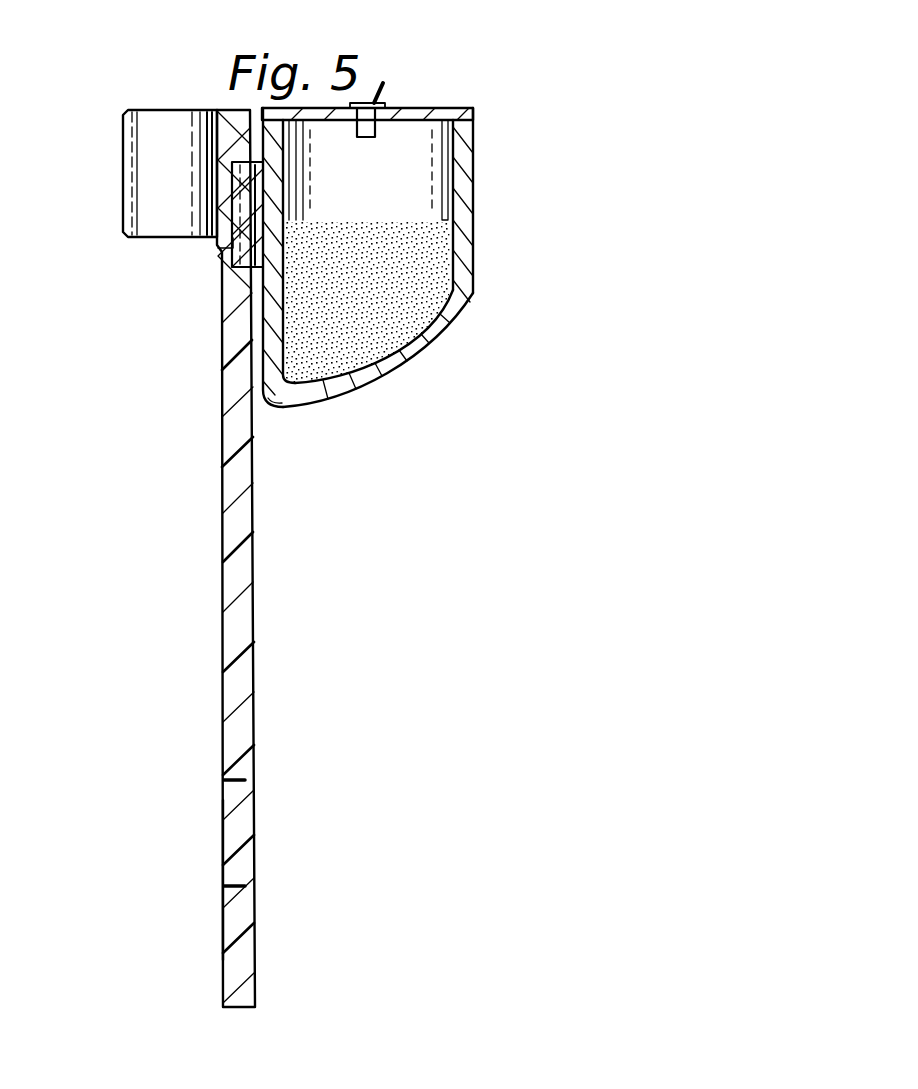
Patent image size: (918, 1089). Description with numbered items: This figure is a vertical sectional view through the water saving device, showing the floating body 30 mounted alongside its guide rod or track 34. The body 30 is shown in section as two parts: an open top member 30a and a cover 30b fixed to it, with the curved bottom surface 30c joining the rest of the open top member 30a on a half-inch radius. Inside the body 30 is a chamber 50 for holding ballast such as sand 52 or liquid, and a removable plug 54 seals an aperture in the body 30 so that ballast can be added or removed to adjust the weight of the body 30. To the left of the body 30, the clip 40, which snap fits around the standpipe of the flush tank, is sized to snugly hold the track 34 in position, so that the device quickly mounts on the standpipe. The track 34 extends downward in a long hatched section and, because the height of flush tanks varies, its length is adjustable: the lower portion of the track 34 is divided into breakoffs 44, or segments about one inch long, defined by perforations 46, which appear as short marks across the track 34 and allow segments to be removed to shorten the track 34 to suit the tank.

The floating body 30 is at (389, 264).
The open top member 30a is at (447, 343).
The cover 30b is at (425, 108).
The bottom surface 30c is at (352, 398).
The guide rod or track 34 is at (270, 557).
The clip 40 is at (127, 239).
The breakoffs 44 is at (223, 826).
The perforations 46 is at (223, 779).
The chamber 50 is at (387, 199).
The sand 52 is at (453, 231).
The removable plug 54 is at (383, 137).